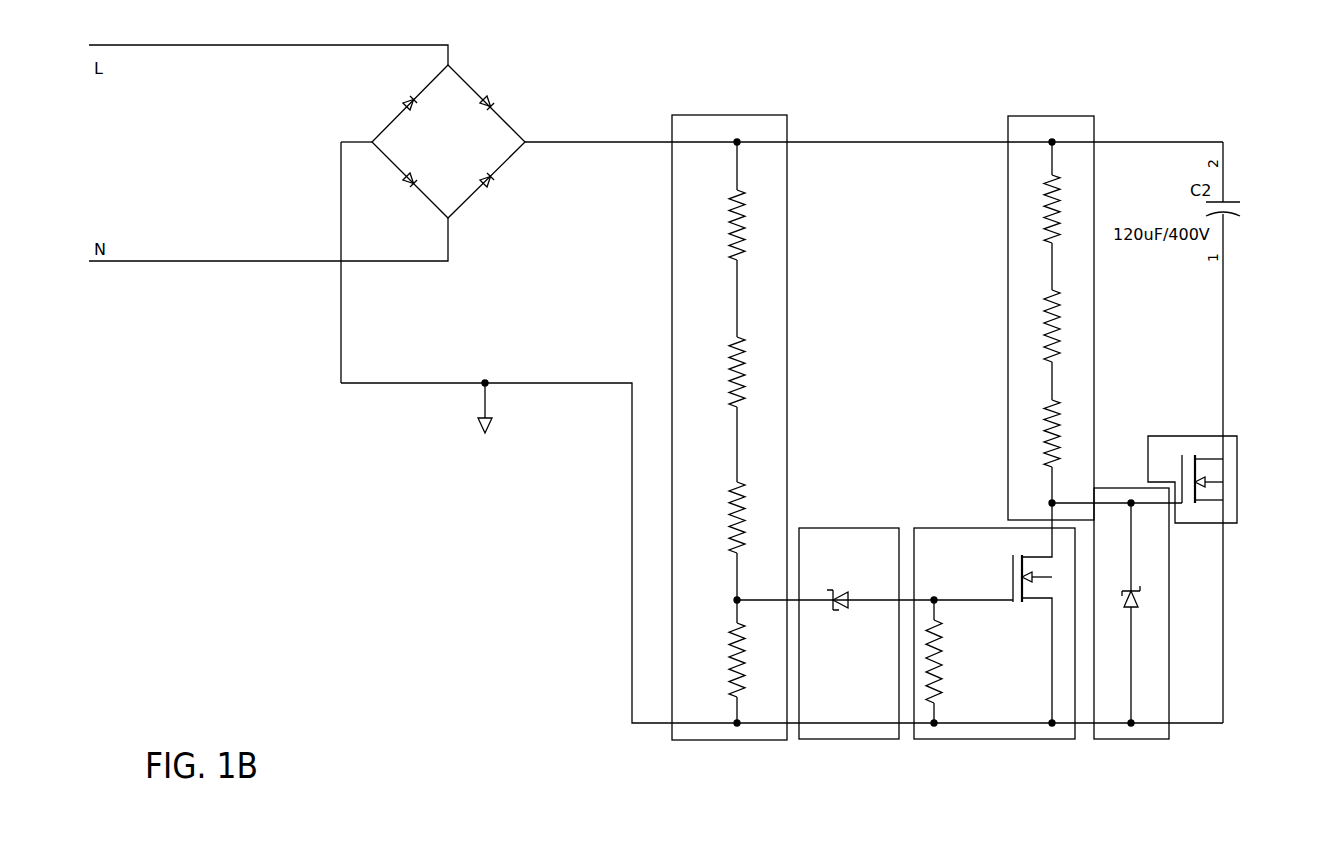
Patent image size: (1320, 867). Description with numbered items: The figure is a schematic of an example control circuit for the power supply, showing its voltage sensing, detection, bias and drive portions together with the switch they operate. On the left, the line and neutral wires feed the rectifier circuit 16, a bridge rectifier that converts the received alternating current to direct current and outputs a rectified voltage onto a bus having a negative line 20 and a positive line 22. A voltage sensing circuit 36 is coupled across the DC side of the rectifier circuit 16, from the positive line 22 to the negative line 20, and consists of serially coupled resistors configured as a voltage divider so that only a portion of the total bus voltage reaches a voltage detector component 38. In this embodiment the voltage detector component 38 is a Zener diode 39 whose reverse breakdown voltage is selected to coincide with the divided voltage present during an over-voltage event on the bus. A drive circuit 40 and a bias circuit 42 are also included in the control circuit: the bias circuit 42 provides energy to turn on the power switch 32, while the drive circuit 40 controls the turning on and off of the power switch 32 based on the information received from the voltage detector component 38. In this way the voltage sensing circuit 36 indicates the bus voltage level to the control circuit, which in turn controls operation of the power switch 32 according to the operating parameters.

The rectifier circuit 16 is at (558, 78).
The positive line 22 is at (558, 142).
The negative line 20 is at (556, 383).
The voltage sensing circuit 36 is at (787, 256).
The voltage detector component 38 is at (849, 620).
The Zener diode 39 is at (841, 592).
The drive circuit 40 is at (1015, 742).
The bias circuit 42 is at (1065, 116).
The power switch 32 is at (1237, 487).